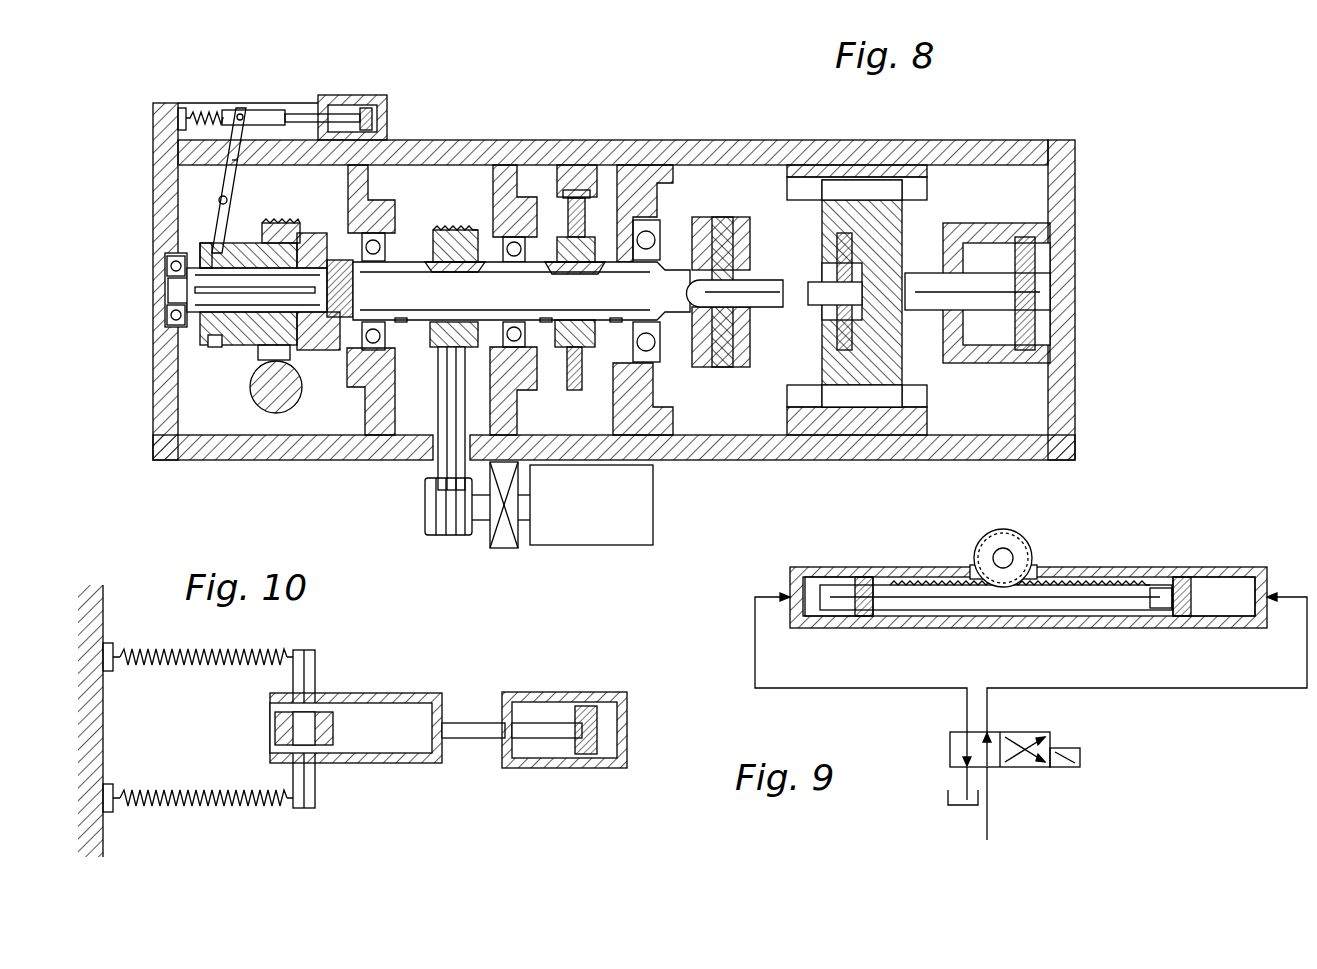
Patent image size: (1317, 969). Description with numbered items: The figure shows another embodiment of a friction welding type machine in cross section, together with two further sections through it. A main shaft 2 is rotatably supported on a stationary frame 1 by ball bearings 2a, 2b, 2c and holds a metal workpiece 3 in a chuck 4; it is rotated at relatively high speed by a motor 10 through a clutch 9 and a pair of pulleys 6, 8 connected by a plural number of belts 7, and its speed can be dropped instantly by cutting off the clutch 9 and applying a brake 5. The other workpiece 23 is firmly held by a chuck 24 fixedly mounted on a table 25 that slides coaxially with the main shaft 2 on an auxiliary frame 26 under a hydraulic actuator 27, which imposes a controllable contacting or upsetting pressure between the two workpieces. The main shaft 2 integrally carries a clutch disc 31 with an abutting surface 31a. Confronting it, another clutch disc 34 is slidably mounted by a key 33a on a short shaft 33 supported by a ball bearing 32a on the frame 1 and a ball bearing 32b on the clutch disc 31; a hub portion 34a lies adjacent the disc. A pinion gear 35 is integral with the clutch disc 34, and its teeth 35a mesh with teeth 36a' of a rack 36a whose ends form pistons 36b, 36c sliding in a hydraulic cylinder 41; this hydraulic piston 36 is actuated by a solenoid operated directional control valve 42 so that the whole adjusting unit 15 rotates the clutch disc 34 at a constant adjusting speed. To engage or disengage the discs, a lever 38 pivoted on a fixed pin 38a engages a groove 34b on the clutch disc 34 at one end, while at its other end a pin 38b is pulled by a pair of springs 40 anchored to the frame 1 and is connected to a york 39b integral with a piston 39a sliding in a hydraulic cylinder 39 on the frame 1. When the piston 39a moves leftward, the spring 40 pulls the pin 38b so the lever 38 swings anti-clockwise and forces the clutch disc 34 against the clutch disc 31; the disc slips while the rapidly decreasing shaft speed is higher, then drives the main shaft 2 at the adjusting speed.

In FIG. 8, the stationary frame 1 is at (608, 140).
In FIG. 10, the stationary frame 1 is at (106, 728).
In FIG. 8, the main shaft 2 is at (502, 304).
In FIG. 8, the ball bearing 2a is at (614, 316).
In FIG. 8, the ball bearing 2b is at (545, 316).
In FIG. 8, the ball bearing 2c is at (396, 322).
In FIG. 8, the metal workpiece 3 is at (772, 282).
In FIG. 8, the chuck 4 is at (722, 220).
In FIG. 8, the brake 5 is at (568, 200).
In FIG. 8, the pulley 6 is at (441, 230).
In FIG. 8, the belts 7 is at (438, 393).
In FIG. 8, the pulley 8 is at (425, 509).
In FIG. 8, the clutch 9 is at (496, 548).
In FIG. 8, the motor 10 is at (596, 545).
In FIG. 8, the actuator unit 15 is at (298, 430).
In FIG. 9, the actuator unit 15 is at (885, 560).
In FIG. 8, the workpiece 23 is at (815, 306).
In FIG. 8, the chuck 24 is at (838, 340).
In FIG. 8, the table 25 is at (822, 224).
In FIG. 8, the auxiliary frame 26 is at (930, 188).
In FIG. 8, the hydraulic actuator 27 is at (988, 225).
In FIG. 8, the clutch disc 31 is at (342, 358).
In FIG. 8, the abutting surface 31a is at (312, 340).
In FIG. 8, the ball bearing 32a is at (165, 322).
In FIG. 8, the ball bearing 32b is at (353, 283).
In FIG. 8, the short shaft 33 is at (243, 340).
In FIG. 8, the key 33a is at (172, 290).
In FIG. 8, the clutch disc 34 is at (216, 346).
In FIG. 8, the sleeve portion 34a is at (310, 243).
In FIG. 8, the groove 34b is at (203, 336).
In FIG. 8, the pinion gear 35 is at (300, 223).
In FIG. 9, the pinion gear 35 is at (978, 548).
In FIG. 9, the teeth 35a is at (1010, 550).
In FIG. 8, the hydraulic piston 36 is at (252, 392).
In FIG. 9, the hydraulic piston 36 is at (958, 605).
In FIG. 9, the rack 36a is at (1171, 574).
In FIG. 9, the teeth 36a' is at (1020, 563).
In FIG. 9, the piston 36b is at (835, 628).
In FIG. 9, the piston 36c is at (1195, 628).
In FIG. 8, the lever 38 is at (228, 188).
In FIG. 10, the lever 38 is at (275, 732).
In FIG. 8, the fixed pin 38a is at (163, 199).
In FIG. 8, the pin 38b is at (232, 110).
In FIG. 10, the pin 38b is at (318, 680).
In FIG. 8, the hydraulic cylinder 39 is at (350, 95).
In FIG. 10, the hydraulic cylinder 39 is at (552, 692).
In FIG. 8, the piston 39a is at (392, 100).
In FIG. 10, the piston 39a is at (578, 756).
In FIG. 8, the york 39b is at (281, 110).
In FIG. 10, the york 39b is at (345, 763).
In FIG. 8, the spring 40 is at (205, 108).
In FIG. 10, the spring 40 is at (158, 670).
In FIG. 9, the hydraulic cylinder 41 is at (1035, 628).
In FIG. 9, the directional control valve 42 is at (1005, 768).